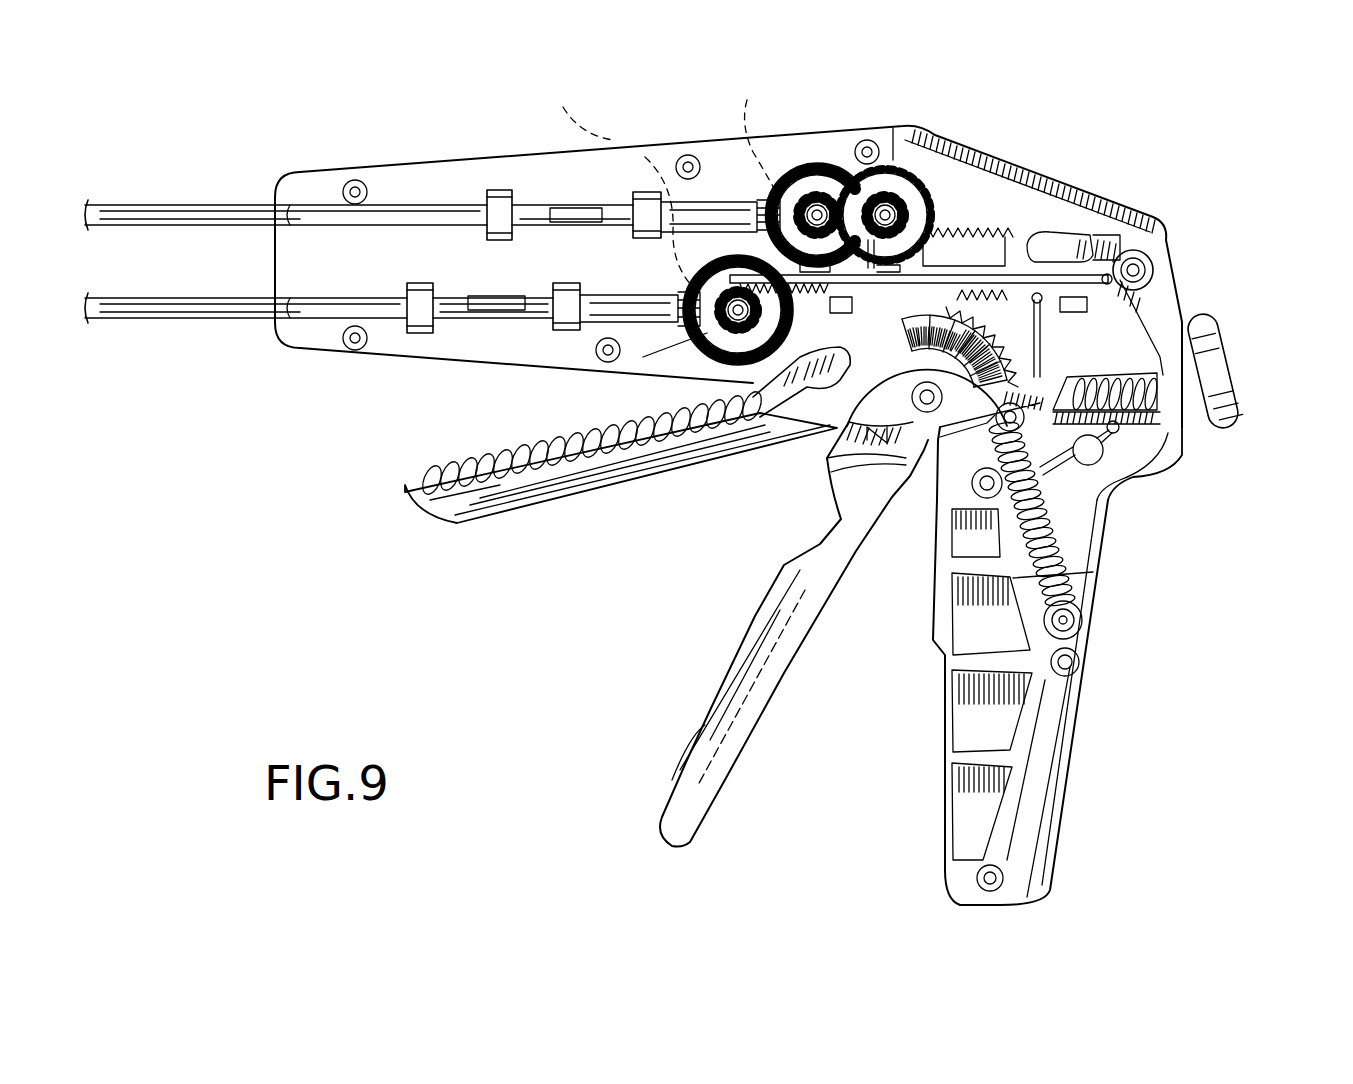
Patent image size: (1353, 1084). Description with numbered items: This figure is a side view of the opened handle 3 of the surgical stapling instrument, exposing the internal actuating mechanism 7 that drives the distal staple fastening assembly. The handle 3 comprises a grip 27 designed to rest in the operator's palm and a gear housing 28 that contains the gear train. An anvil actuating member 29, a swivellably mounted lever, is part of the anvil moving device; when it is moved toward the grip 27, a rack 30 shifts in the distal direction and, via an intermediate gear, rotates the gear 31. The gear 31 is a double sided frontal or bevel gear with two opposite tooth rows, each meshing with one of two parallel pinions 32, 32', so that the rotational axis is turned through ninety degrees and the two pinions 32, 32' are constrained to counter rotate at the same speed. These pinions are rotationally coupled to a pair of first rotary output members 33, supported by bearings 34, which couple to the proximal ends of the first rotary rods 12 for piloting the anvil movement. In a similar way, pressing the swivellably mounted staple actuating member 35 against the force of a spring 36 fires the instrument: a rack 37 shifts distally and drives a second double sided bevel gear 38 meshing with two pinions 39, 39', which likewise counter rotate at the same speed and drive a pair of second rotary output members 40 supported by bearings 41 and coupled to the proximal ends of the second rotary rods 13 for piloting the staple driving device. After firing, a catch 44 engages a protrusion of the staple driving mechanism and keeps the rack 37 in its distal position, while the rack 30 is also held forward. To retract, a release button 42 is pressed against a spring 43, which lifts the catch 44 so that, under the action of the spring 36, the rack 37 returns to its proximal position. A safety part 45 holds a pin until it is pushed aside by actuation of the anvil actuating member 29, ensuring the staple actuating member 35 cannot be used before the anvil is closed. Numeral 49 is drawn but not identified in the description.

The handle 3 is at (1123, 625).
The actuating mechanism 7 is at (1016, 218).
The first rotary rods 12 is at (425, 213).
The second rotary rods 13 is at (293, 338).
The grip 27 is at (1040, 790).
The gear housing 28 is at (407, 347).
The anvil actuating member 29 is at (707, 780).
The rack 30 is at (1000, 223).
The gear 31 is at (818, 163).
The pinion 32 is at (720, 157).
The pinion 32' is at (760, 126).
The first rotary output members 33 is at (707, 215).
The bearings 34 is at (613, 213).
The staple actuating member 35 is at (567, 487).
The spring 36 is at (1057, 510).
The rack 37 is at (747, 420).
The gear 38 is at (680, 320).
The pinion 39 is at (605, 362).
The pinion 39' is at (613, 177).
The second rotary output members 40 is at (533, 307).
The bearings 41 is at (520, 330).
The release button 42 is at (1213, 360).
The spring 43 is at (1160, 463).
The catch 44 is at (1060, 240).
The part 45 is at (1058, 372).
The spur gear 49 is at (917, 207).